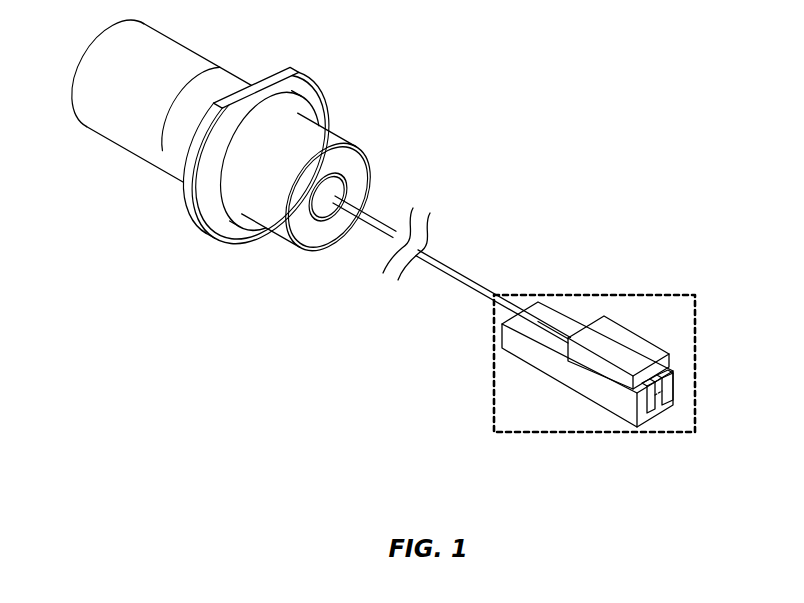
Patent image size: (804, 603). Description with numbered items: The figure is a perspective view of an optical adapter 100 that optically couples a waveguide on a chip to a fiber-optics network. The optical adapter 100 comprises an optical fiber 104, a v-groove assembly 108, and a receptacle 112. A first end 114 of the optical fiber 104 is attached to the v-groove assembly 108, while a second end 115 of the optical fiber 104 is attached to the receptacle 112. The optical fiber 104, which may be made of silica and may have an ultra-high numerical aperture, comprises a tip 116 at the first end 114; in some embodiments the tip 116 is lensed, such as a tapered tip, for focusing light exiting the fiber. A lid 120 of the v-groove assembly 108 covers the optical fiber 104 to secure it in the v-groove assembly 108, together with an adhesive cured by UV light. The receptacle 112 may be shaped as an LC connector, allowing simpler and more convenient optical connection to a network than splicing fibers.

The optical adapter 100 is at (540, 124).
The optical fiber 104 is at (477, 283).
The v-groove assembly 108 is at (562, 433).
The receptacle 112 is at (153, 142).
The first end 114 is at (563, 330).
The second end 115 is at (370, 225).
The tip 116 is at (650, 384).
The lid 120 is at (610, 351).